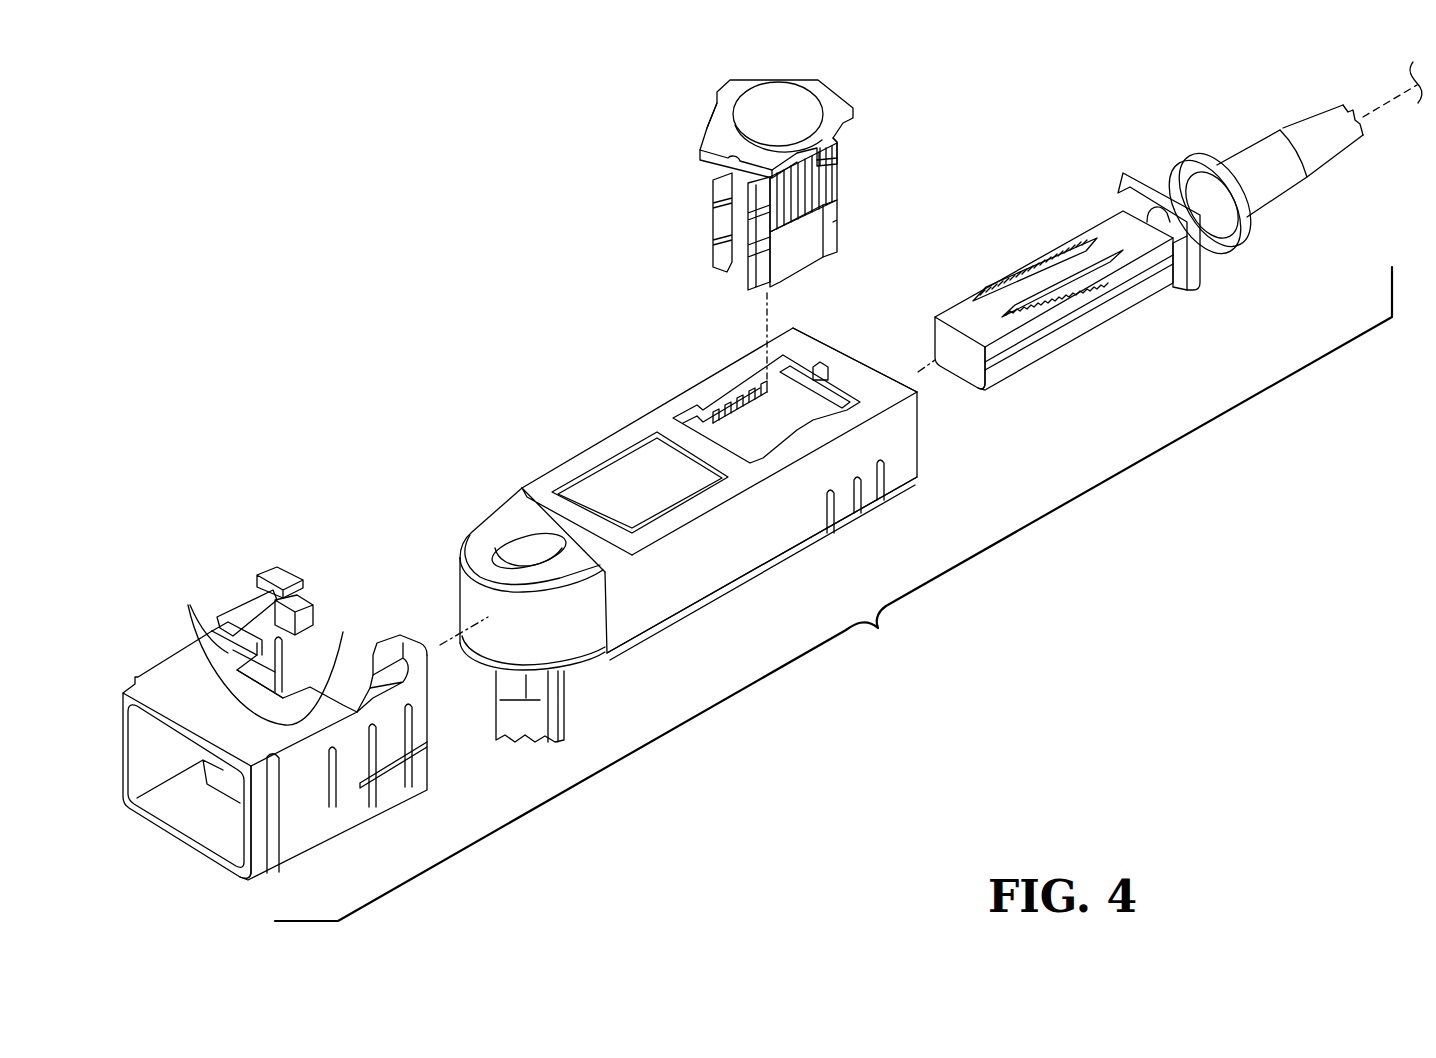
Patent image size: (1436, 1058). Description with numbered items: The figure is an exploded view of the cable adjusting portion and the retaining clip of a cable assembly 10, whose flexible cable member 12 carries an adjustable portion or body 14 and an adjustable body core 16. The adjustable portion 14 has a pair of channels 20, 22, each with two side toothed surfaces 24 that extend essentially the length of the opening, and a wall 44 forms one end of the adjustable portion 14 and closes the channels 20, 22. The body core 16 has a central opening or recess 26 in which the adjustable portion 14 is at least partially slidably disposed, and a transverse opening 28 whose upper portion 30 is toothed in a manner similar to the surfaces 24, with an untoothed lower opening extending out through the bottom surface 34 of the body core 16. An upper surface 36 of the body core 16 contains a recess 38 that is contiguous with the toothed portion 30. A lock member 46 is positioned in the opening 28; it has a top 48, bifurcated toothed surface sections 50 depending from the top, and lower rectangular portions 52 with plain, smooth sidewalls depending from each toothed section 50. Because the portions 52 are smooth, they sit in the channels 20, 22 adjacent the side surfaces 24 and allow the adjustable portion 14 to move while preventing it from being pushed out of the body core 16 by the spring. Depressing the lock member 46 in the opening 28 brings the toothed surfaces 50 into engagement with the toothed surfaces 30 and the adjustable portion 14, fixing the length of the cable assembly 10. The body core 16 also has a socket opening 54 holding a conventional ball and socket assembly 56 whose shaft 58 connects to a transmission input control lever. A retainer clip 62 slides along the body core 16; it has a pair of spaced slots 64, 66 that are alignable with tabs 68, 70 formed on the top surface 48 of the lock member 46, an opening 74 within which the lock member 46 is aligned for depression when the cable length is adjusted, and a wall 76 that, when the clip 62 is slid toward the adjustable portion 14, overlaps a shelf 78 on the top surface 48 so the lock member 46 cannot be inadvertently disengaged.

The cable assembly 10 is at (1097, 516).
The flexible cable member 12 is at (1397, 95).
The adjustable portion or body 14 is at (1149, 274).
The adjustable body core 16 is at (552, 460).
The channel 20 is at (1128, 254).
The channel 22 is at (1093, 244).
The side toothed surfaces 24 is at (1045, 306).
The central opening or recess 26 is at (792, 424).
The transverse opening 28 is at (757, 383).
The upper portion 30 is at (768, 436).
The bottom surface 34 is at (721, 589).
The upper surface 36 is at (850, 370).
The recess 38 is at (763, 385).
The wall 44 is at (965, 362).
The lock member 46 is at (776, 176).
The top 48 is at (797, 107).
The bifurcated toothed surface sections 50 is at (780, 202).
The lower rectangular portions 52 is at (817, 222).
The socket opening 54 is at (532, 537).
The ball and socket assembly 56 is at (570, 696).
The shaft 58 is at (506, 703).
The retainer clip 62 is at (271, 705).
The slot 64 is at (297, 598).
The slot 66 is at (384, 655).
The tab 68 is at (733, 92).
The tab 70 is at (822, 160).
The opening 74 is at (322, 692).
The wall 76 is at (258, 650).
The shelf 78 is at (733, 157).